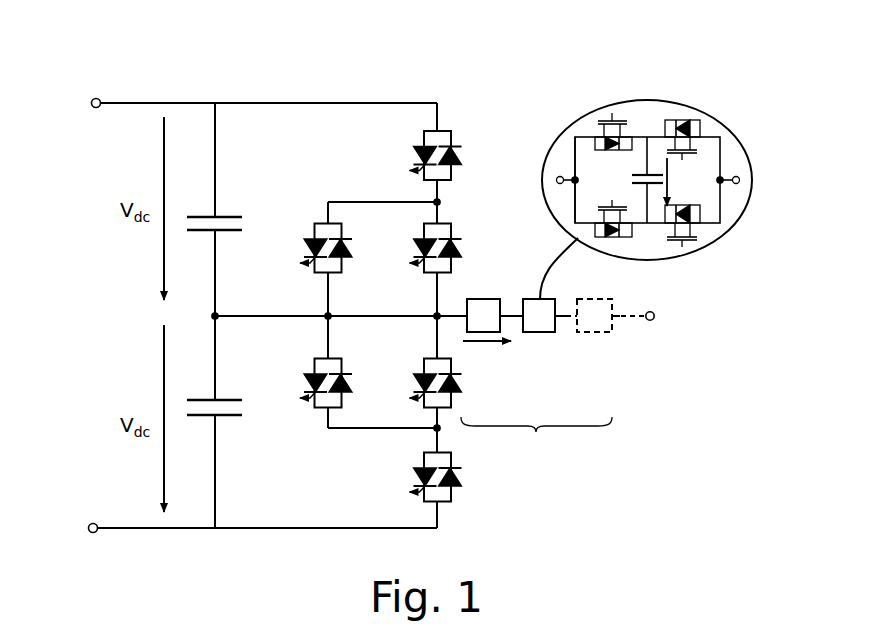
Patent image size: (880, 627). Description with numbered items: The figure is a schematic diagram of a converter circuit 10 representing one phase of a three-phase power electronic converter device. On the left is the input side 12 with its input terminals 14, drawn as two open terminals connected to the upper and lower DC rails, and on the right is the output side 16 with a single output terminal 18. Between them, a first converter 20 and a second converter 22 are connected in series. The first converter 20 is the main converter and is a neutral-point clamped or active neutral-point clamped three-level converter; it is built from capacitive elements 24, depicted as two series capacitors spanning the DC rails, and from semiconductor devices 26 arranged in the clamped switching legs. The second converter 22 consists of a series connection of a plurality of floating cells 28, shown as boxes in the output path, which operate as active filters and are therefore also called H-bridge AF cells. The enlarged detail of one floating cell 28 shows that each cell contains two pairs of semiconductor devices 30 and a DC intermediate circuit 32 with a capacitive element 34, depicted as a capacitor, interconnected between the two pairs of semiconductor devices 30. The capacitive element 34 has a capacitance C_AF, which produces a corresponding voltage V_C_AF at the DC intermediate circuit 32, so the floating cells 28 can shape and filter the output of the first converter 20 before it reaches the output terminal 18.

The converter circuit 10 is at (596, 504).
The input side 12 is at (101, 94).
The input terminals 14 is at (91, 105).
The output side 16 is at (650, 350).
The output terminal 18 is at (655, 316).
The first converter 20 is at (478, 523).
The second converter 22 is at (536, 399).
The capacitive elements 24 is at (237, 215).
The semiconductor devices 26 is at (404, 140).
The floating cells 28 is at (477, 298).
The semiconductor devices 30 is at (599, 99).
The DC intermediate circuit 32 is at (647, 128).
The capacitive element 34 is at (632, 176).